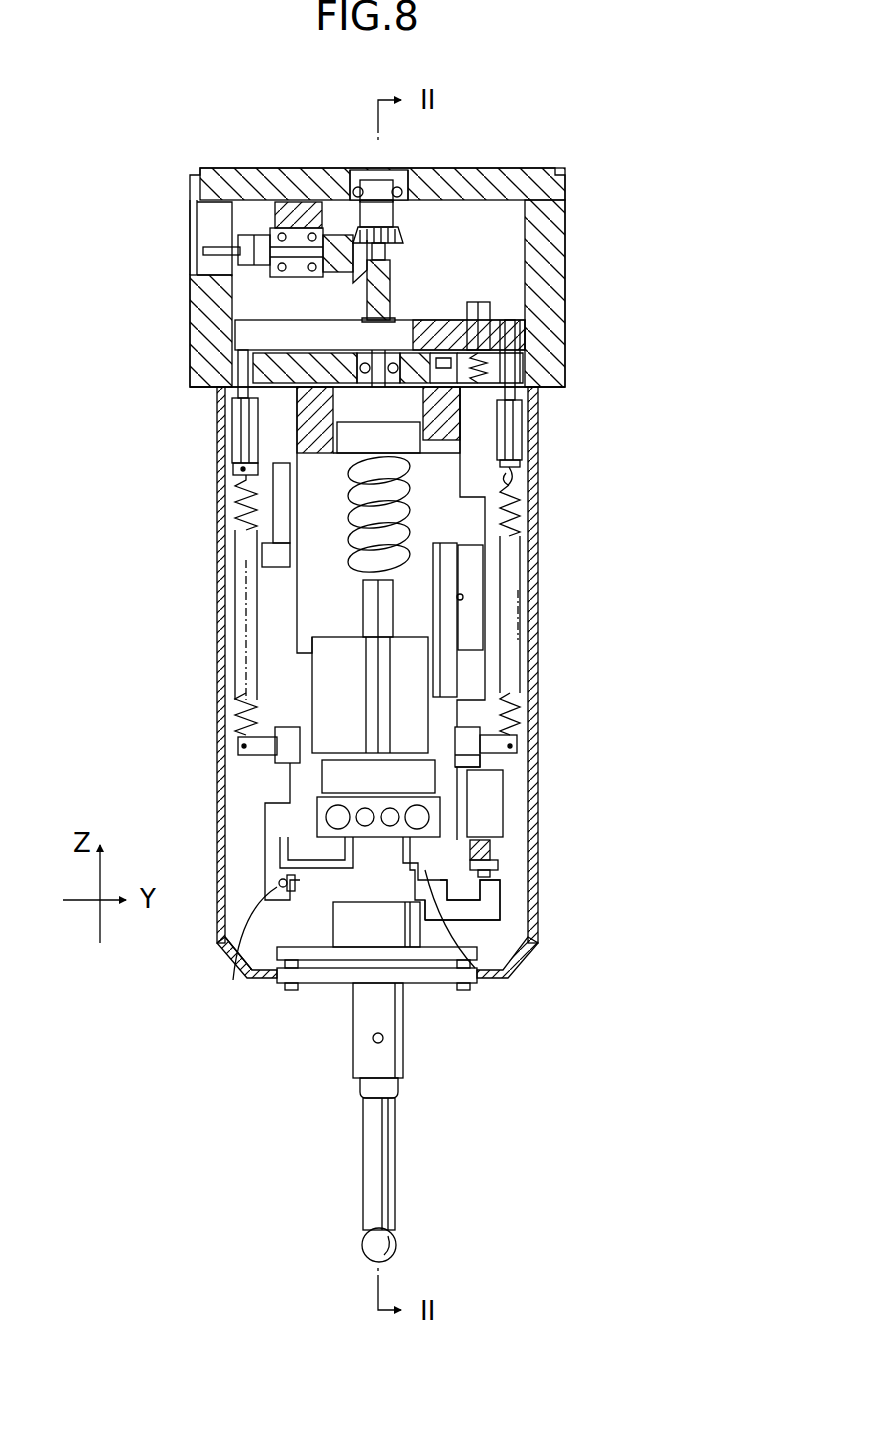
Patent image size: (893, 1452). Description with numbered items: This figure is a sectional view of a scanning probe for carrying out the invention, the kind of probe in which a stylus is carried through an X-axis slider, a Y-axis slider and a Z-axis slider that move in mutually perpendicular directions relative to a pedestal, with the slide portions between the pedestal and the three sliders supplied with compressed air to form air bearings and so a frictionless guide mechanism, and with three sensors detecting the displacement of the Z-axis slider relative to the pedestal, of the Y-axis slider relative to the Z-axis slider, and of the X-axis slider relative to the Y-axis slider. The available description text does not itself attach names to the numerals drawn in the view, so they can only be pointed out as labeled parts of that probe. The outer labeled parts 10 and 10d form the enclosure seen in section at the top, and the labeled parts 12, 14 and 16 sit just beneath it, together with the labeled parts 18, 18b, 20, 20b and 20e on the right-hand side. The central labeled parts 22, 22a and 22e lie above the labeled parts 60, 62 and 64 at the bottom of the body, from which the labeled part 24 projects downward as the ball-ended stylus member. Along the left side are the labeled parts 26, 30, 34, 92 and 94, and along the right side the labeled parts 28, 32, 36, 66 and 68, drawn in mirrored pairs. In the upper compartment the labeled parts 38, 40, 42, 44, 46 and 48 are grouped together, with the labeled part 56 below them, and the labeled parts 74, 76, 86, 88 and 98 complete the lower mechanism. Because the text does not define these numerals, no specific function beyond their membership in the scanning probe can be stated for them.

The housing 10 is at (555, 352).
The housing side wall 10d is at (197, 262).
The support bracket 12 is at (320, 468).
The support frame 14 is at (457, 405).
The guide rod 16 is at (260, 432).
The slider block 18 is at (466, 722).
The slider block lower portion 18b is at (483, 757).
The lever member 20 is at (478, 822).
The lever member portion 20b is at (512, 972).
The lever member end 20e is at (478, 920).
The measuring head block 22 is at (322, 850).
The ball bearings 22a is at (330, 810).
The head block end 22e is at (490, 895).
The stylus 24 is at (385, 1160).
The left biasing spring 26 is at (268, 737).
The right biasing spring arm 28 is at (520, 745).
The left return spring 30 is at (240, 525).
The right return spring 32 is at (517, 510).
The left cylinder 34 is at (235, 450).
The right cylinder 36 is at (515, 455).
The mounting plate 38 is at (447, 340).
The feed screw 40 is at (392, 270).
The guide collar 42 is at (480, 302).
The bevel gear 44 is at (405, 235).
The gear box 46 is at (345, 270).
The motor 48 is at (222, 250).
The block 56 is at (352, 432).
The stylus holder 60 is at (398, 1073).
The lower plate 62 is at (427, 988).
The upper plate 64 is at (287, 955).
The column 66 is at (483, 557).
The guide member 68 is at (462, 597).
The pin 74 is at (240, 967).
The chamfered wall portion 76 is at (227, 940).
The adjusting screw 86 is at (490, 850).
The contact plate 88 is at (496, 868).
The guide plate 92 is at (280, 527).
The stopper block 94 is at (280, 560).
The spacer plate 98 is at (325, 780).